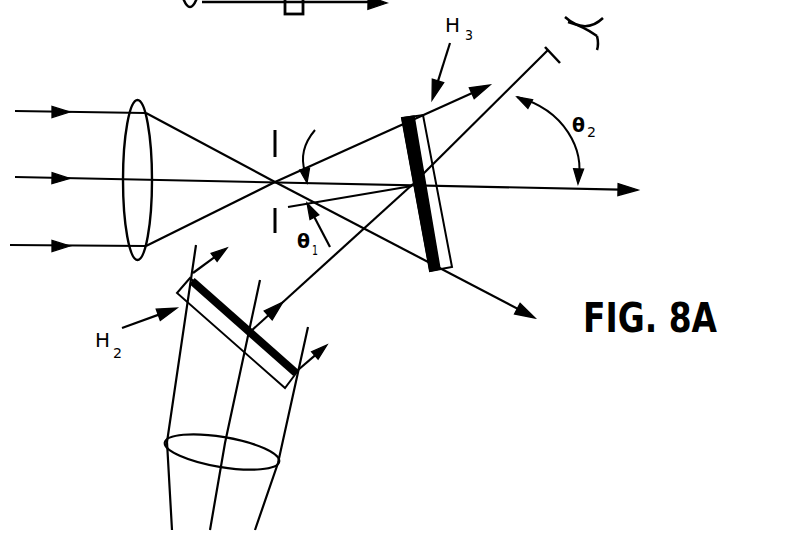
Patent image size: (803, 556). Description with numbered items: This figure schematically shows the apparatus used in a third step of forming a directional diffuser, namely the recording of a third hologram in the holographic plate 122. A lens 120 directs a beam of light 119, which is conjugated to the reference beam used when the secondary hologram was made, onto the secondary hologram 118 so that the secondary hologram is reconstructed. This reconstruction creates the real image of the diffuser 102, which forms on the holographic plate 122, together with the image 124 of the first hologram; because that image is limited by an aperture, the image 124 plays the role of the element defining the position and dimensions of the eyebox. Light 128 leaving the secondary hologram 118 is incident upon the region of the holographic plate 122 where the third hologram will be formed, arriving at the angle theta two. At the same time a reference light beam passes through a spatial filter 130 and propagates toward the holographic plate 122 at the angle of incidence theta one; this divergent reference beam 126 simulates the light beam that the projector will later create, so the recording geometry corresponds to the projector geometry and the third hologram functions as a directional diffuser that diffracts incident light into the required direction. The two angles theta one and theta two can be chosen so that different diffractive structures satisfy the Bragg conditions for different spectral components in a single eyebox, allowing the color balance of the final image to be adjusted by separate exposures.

The spatial filter 130 is at (114, 79).
The divergent reference beam 126 is at (328, 121).
The light from the secondary hologram 128 is at (325, 267).
The diffuser 102 is at (450, 233).
The holographic plate 122 is at (433, 274).
The image of the first hologram 124 is at (556, 58).
The secondary hologram 118 is at (305, 377).
The beam of light 119 is at (312, 433).
The lens 120 is at (168, 440).